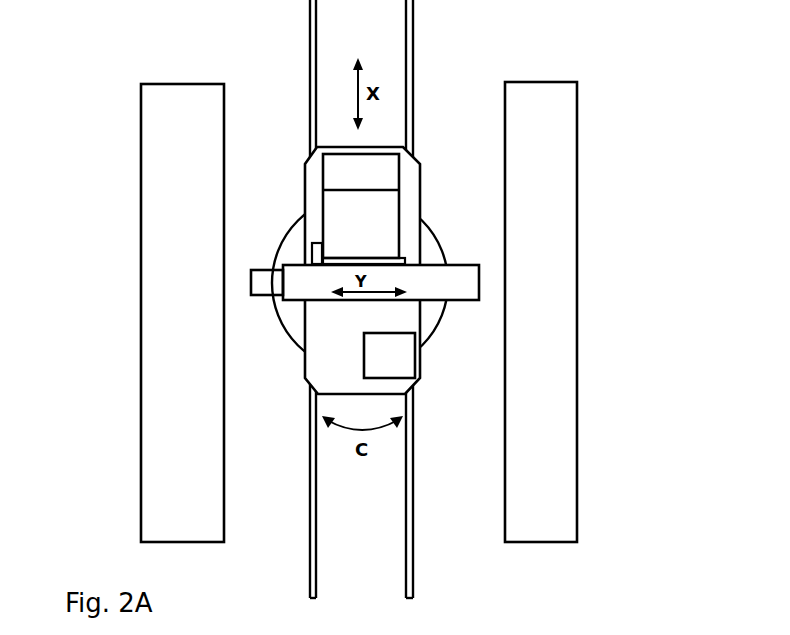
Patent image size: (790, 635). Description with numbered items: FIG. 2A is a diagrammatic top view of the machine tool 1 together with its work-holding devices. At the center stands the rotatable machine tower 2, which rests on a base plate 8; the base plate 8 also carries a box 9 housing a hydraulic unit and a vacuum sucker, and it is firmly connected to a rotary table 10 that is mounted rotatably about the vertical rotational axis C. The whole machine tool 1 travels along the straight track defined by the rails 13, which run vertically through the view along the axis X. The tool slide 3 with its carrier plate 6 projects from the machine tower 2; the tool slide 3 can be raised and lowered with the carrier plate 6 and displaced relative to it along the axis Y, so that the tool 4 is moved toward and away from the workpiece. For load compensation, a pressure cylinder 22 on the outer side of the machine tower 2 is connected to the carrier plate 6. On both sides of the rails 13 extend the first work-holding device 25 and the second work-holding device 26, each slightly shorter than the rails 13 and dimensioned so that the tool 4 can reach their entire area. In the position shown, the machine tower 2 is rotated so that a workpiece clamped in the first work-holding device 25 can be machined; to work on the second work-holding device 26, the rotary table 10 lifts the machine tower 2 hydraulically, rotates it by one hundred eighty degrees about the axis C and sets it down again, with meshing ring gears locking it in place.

The machine tool 1 is at (431, 140).
The machine tower 2 is at (368, 208).
The tool slide 3 is at (460, 285).
The tool 4 is at (264, 282).
The carrier plate 6 is at (403, 258).
The base plate 8 is at (410, 178).
The box 9 is at (397, 355).
The rotary table 10 is at (427, 317).
The rails 13 is at (408, 487).
The pressure cylinder 22 is at (317, 243).
The first work-holding device 25 is at (152, 207).
The second work-holding device 26 is at (555, 350).